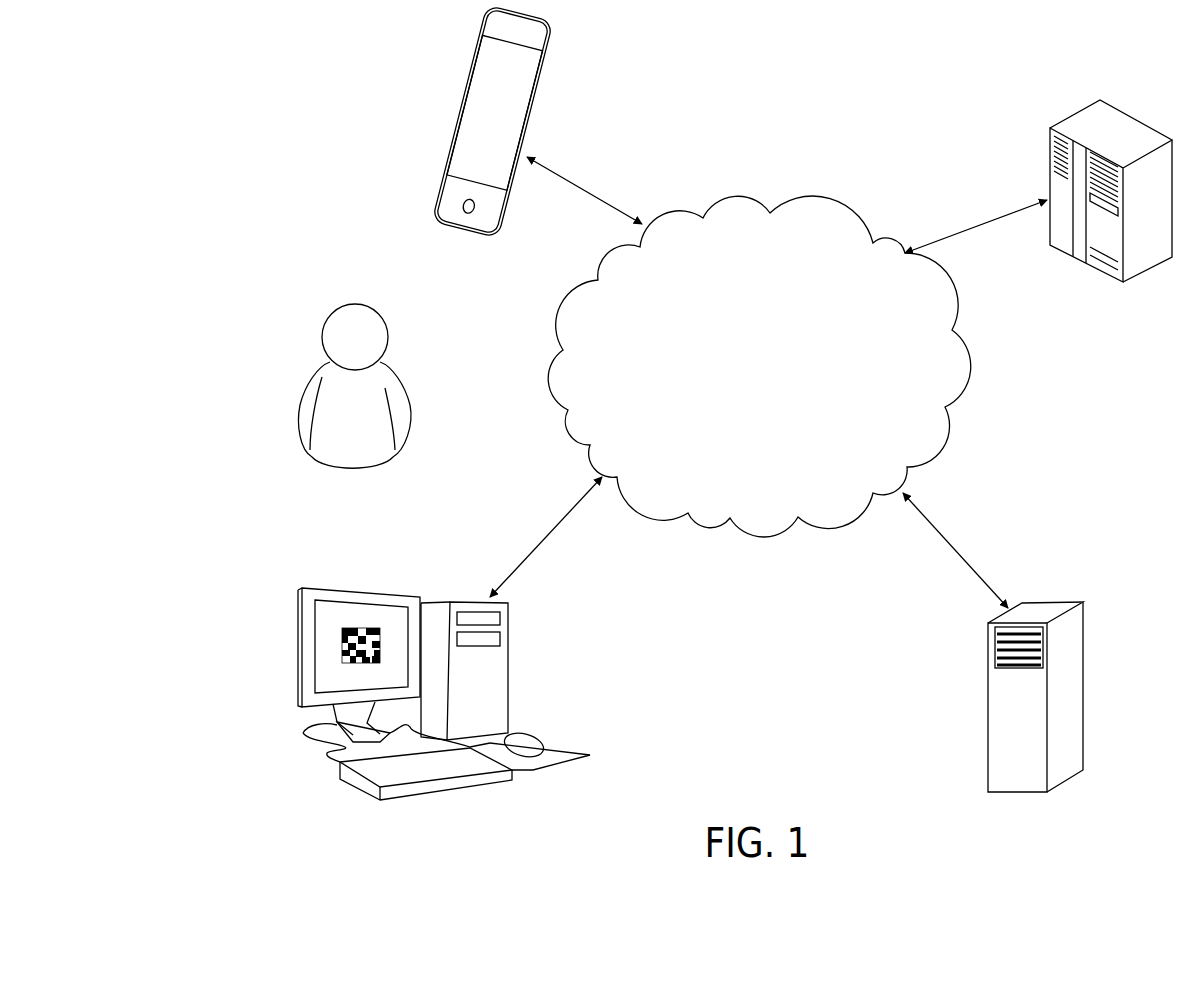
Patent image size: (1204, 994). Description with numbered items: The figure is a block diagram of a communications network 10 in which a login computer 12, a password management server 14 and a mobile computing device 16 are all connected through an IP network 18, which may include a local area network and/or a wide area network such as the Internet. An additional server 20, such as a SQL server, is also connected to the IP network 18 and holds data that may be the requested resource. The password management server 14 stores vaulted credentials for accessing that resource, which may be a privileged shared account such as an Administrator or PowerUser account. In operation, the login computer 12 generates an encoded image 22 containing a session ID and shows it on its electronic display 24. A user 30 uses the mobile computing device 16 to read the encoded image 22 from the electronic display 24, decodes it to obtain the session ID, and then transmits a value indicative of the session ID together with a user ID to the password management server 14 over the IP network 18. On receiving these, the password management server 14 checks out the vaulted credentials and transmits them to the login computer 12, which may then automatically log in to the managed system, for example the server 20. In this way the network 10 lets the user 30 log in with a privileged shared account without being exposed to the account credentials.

The communications network 10 is at (227, 118).
The login computer 12 is at (408, 722).
The password management server 14 is at (1130, 113).
The mobile computing device 16 is at (554, 77).
The IP network 18 is at (744, 465).
The additional server 20 is at (1085, 672).
The encoded image 22 is at (337, 642).
The electronic display 24 is at (300, 605).
The user 30 is at (298, 395).